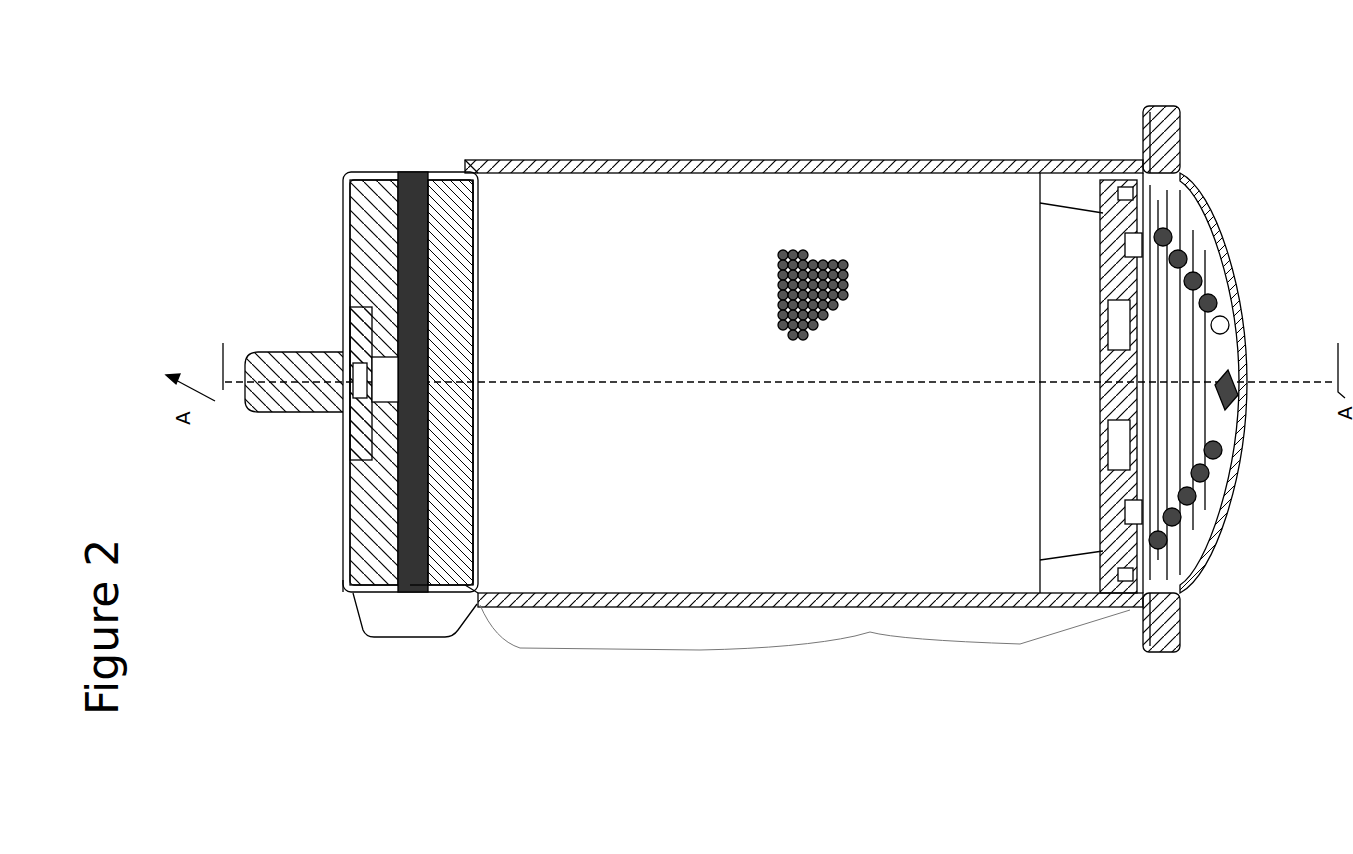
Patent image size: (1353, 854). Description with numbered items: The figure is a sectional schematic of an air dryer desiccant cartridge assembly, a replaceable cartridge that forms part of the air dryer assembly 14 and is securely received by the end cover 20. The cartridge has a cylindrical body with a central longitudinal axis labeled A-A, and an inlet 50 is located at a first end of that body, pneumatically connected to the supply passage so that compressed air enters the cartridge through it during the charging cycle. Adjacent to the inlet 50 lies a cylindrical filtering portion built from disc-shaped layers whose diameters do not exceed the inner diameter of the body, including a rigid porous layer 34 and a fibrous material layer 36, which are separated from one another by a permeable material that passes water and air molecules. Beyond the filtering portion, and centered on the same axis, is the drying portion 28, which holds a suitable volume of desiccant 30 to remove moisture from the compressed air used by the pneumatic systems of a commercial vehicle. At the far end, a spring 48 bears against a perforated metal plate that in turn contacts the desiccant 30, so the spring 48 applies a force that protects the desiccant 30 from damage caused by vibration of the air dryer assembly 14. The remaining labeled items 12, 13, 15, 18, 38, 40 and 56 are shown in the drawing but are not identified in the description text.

The container body 12 is at (1000, 607).
The sealing layer 13 is at (433, 173).
The air dryer assembly 14 is at (393, 173).
The plug inner layer 15 is at (477, 163).
The flow direction 18 is at (447, 343).
The end cover 20 is at (1248, 140).
The drying portion 28 is at (877, 630).
The desiccant 30 is at (337, 420).
The rigid porous layer 34 is at (356, 600).
The fibrous material layer 36 is at (421, 594).
The tab 38 is at (405, 637).
The pellets 40 is at (782, 255).
The spring 48 is at (1217, 490).
The inlet 50 is at (1237, 420).
The plug corner 56 is at (467, 597).